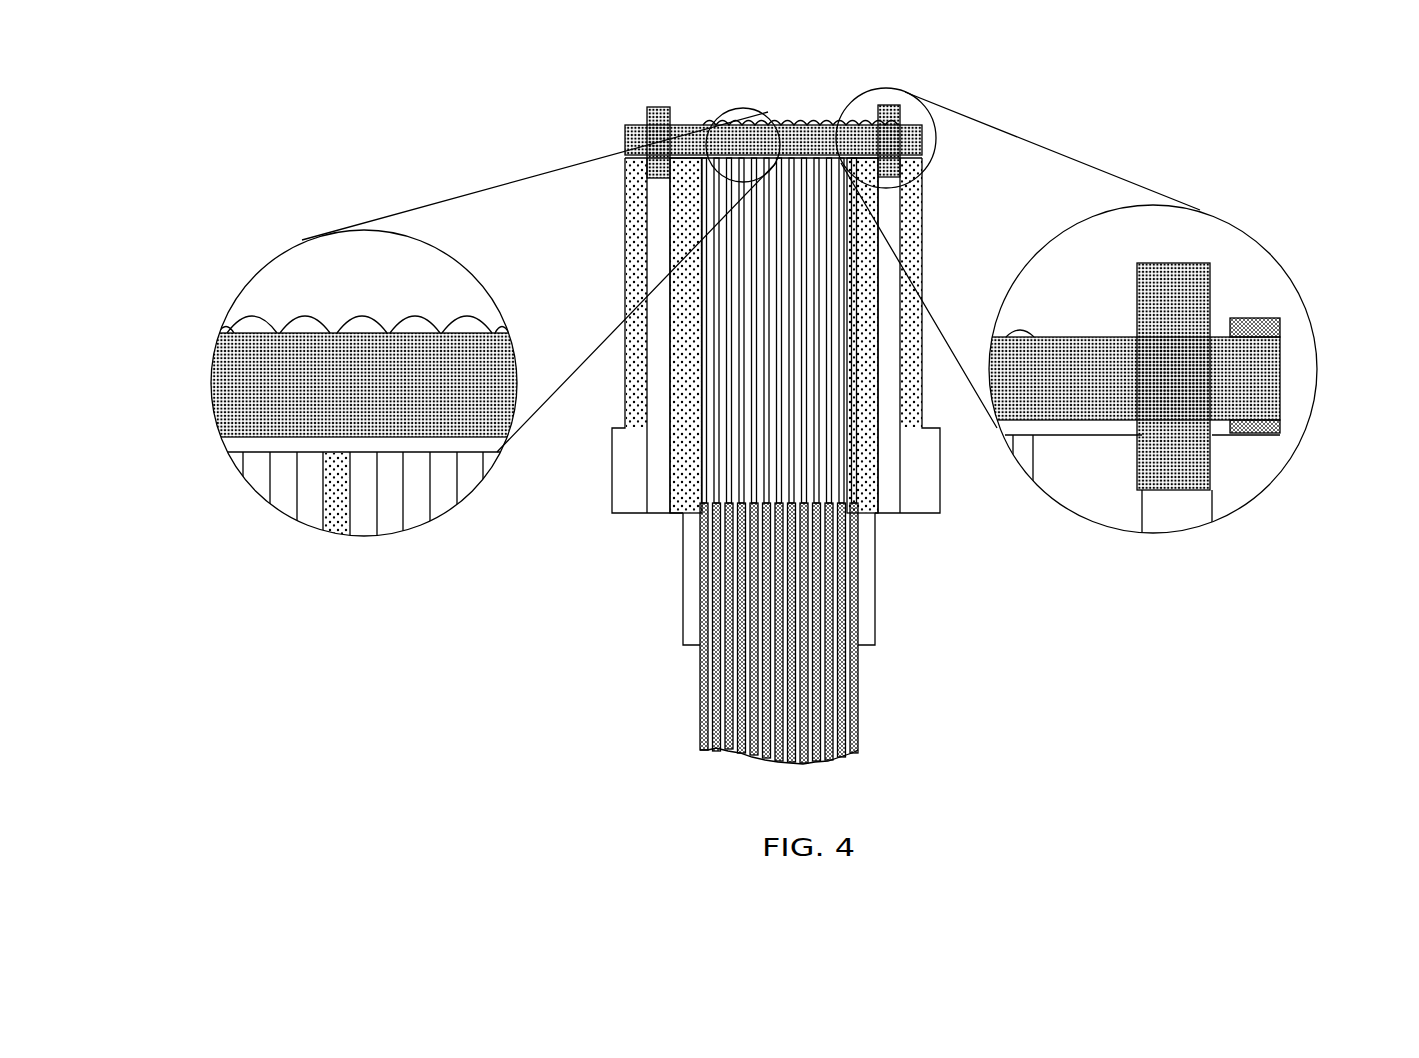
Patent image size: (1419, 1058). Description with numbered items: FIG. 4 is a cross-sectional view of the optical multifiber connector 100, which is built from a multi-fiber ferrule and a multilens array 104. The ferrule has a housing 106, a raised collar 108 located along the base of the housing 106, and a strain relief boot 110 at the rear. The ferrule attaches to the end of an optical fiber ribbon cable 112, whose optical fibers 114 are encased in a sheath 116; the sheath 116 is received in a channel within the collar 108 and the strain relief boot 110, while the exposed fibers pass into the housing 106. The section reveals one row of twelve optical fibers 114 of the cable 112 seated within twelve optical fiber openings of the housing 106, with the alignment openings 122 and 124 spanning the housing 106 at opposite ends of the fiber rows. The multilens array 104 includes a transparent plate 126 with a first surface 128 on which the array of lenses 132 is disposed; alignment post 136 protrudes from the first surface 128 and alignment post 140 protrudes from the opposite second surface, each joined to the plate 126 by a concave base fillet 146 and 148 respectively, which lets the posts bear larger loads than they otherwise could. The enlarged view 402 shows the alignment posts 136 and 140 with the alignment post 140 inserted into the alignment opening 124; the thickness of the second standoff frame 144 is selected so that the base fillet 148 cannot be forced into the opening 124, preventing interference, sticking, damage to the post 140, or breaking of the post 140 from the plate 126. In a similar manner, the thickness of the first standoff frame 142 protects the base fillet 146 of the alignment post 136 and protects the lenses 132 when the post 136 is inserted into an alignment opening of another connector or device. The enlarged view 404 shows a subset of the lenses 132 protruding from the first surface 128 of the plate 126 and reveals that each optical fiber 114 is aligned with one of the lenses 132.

The optical multifiber connector 100 is at (1078, 100).
The multilens array 104 is at (613, 100).
The housing 106 is at (638, 203).
The raised collar 108 is at (621, 466).
The strain relief boot 110 is at (875, 615).
The optical fiber ribbon cable 112 is at (880, 678).
The optical fibers 114 is at (760, 757).
The sheath 116 is at (702, 712).
The alignment opening 122 is at (663, 510).
The alignment opening 124 is at (892, 505).
The transparent plate 126 is at (912, 143).
The first surface 128 is at (497, 323).
The lenses 132 is at (407, 327).
The alignment post 136 is at (1172, 272).
The alignment post 140 is at (1167, 483).
The first standoff frame 142 is at (1253, 320).
The second standoff frame 144 is at (1280, 433).
The base fillet 146 is at (1137, 333).
The base fillet 148 is at (1137, 418).
The enlarged view 402 is at (1058, 237).
The enlarged view 404 is at (312, 238).